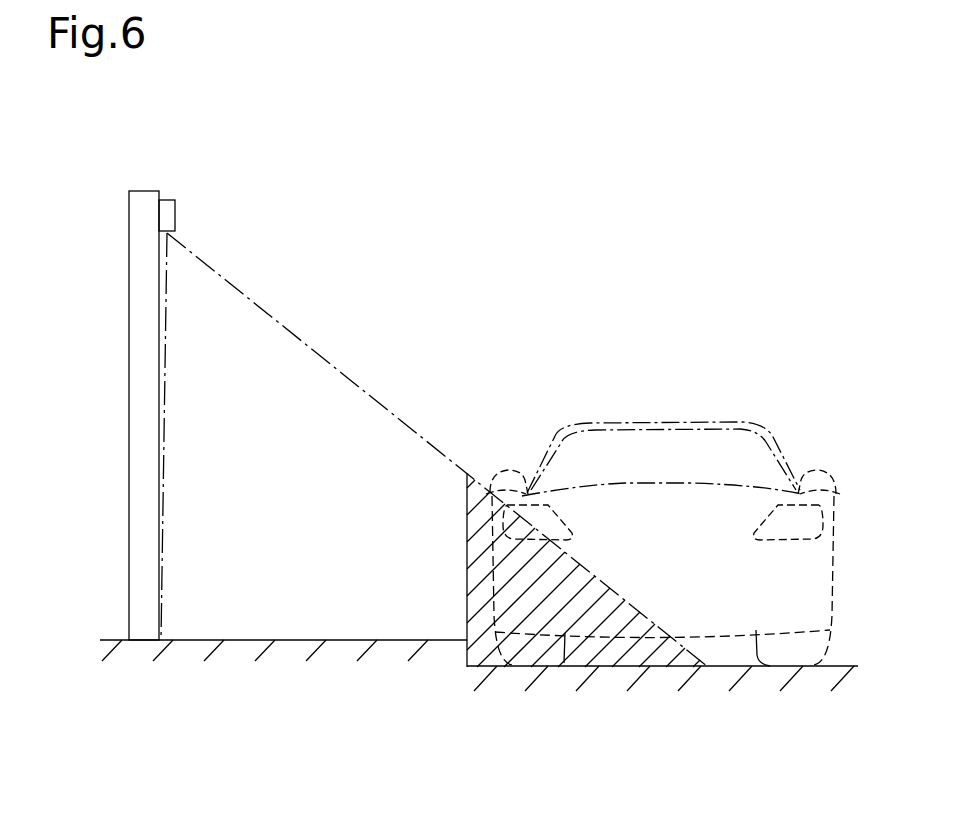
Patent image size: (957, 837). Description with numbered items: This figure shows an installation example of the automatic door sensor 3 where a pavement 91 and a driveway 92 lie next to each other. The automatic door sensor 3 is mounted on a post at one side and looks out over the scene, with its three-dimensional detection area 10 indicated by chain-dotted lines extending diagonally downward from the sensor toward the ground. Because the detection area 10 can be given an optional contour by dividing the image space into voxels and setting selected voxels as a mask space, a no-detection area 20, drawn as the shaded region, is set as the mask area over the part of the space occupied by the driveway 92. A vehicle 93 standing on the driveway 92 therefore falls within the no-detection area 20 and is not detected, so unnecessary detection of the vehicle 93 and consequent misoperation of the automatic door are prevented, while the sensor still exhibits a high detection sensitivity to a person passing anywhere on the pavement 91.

The automatic door sensor 3 is at (175, 215).
The detection area 10 is at (297, 335).
The pavement 91 is at (287, 639).
The driveway 92 is at (735, 666).
The vehicle 93 is at (702, 420).
The no-detection area 20 is at (583, 610).